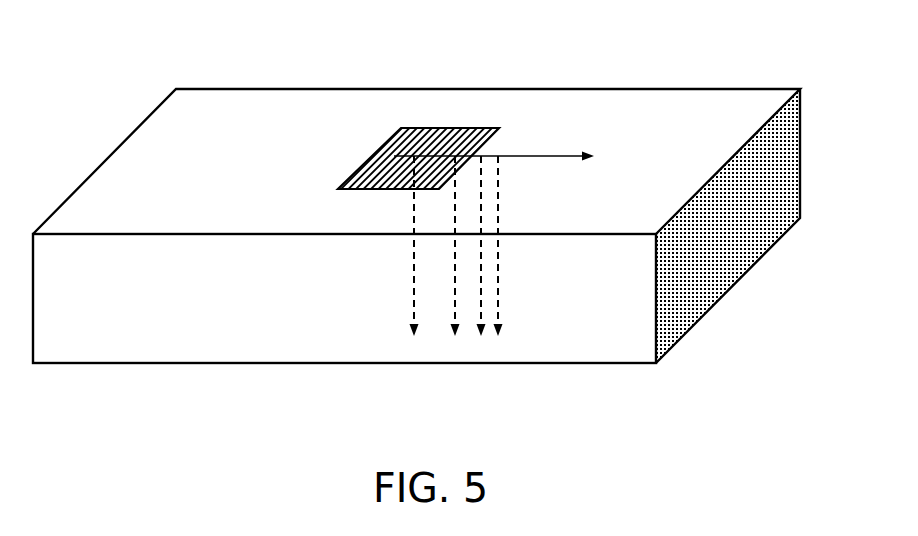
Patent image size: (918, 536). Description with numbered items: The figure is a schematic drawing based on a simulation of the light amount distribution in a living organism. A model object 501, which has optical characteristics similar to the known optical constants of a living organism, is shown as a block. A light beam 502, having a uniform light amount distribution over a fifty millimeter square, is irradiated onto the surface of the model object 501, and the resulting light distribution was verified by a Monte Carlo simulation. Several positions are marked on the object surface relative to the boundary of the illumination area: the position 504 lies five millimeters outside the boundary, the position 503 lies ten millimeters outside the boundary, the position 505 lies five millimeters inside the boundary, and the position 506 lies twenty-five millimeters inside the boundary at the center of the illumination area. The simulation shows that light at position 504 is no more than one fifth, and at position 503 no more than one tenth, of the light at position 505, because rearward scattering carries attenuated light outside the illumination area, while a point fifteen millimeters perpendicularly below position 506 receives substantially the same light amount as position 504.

The model object 501 is at (253, 150).
The light beam 502 is at (459, 128).
The position 503 is at (498, 253).
The position 504 is at (481, 273).
The position 505 is at (454, 297).
The position 506 is at (414, 265).